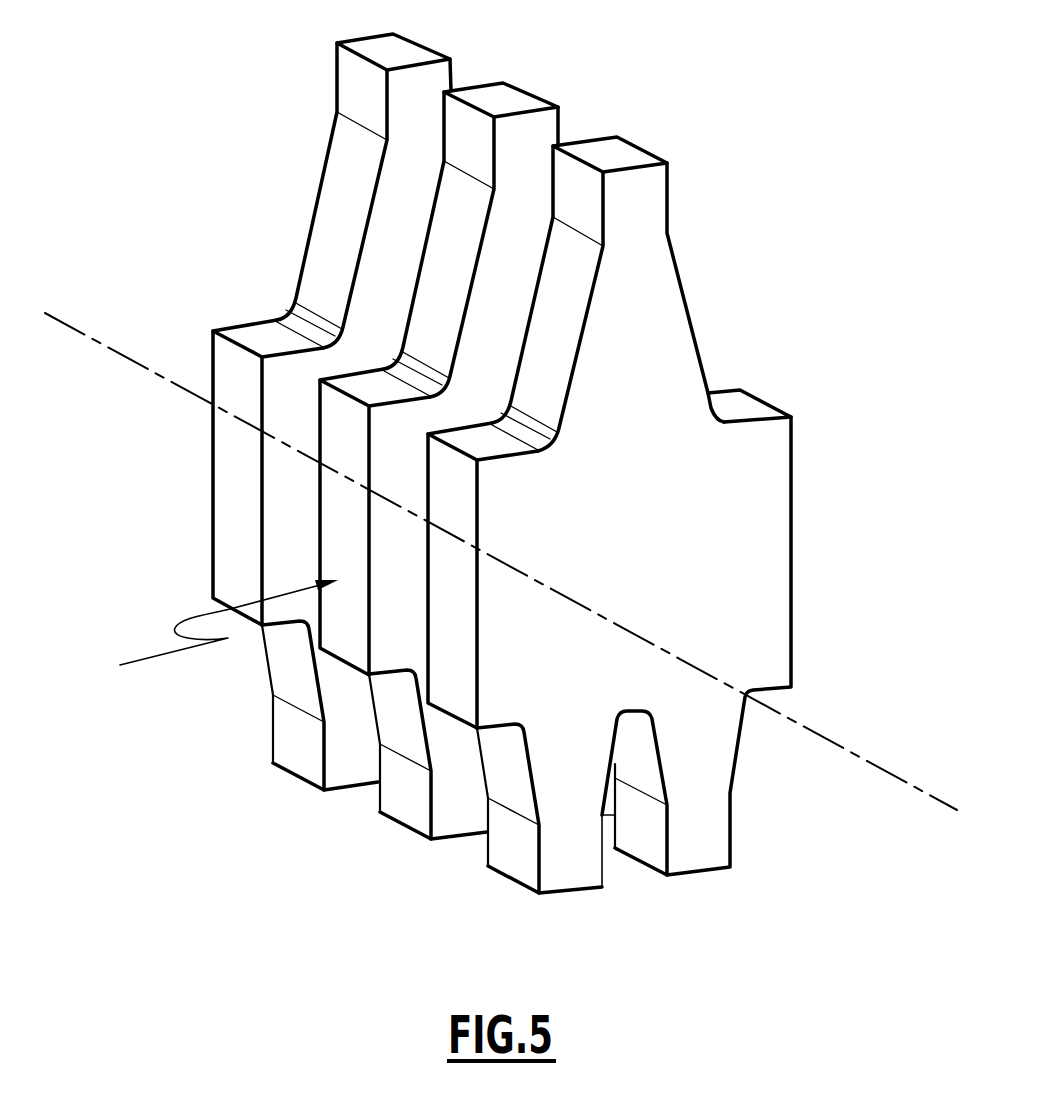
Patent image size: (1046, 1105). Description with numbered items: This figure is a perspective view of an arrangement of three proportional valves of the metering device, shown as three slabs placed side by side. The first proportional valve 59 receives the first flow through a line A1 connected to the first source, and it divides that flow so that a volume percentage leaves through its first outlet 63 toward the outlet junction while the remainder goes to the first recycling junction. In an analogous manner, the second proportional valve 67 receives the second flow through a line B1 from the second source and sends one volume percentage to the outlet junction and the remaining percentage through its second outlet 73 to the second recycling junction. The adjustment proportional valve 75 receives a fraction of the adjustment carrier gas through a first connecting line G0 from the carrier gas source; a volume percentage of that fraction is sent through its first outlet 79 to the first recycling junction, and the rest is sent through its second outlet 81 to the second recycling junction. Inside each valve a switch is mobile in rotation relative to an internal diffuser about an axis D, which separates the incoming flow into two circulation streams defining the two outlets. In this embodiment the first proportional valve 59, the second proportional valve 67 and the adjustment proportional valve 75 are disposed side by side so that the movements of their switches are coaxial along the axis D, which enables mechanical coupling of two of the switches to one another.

The first proportional valve 59 is at (513, 484).
The first outlet 63 is at (332, 433).
The second outlet 73 is at (439, 479).
The adjustment proportional valve 75 is at (682, 534).
The first outlet 79 is at (570, 892).
The second outlet 81 is at (698, 877).
The second proportional valve 67 is at (215, 631).
The line A1 is at (395, 52).
The line B1 is at (502, 97).
The first connecting line G0 is at (610, 153).
The axis D is at (877, 765).